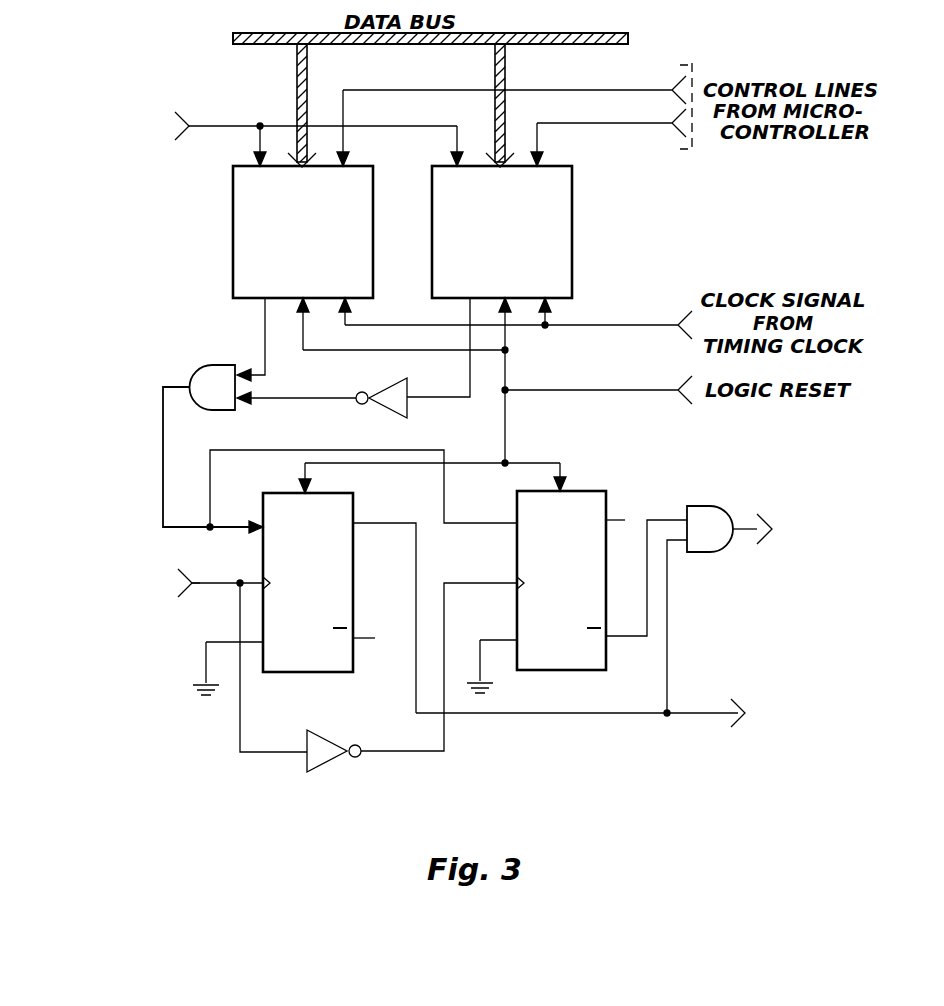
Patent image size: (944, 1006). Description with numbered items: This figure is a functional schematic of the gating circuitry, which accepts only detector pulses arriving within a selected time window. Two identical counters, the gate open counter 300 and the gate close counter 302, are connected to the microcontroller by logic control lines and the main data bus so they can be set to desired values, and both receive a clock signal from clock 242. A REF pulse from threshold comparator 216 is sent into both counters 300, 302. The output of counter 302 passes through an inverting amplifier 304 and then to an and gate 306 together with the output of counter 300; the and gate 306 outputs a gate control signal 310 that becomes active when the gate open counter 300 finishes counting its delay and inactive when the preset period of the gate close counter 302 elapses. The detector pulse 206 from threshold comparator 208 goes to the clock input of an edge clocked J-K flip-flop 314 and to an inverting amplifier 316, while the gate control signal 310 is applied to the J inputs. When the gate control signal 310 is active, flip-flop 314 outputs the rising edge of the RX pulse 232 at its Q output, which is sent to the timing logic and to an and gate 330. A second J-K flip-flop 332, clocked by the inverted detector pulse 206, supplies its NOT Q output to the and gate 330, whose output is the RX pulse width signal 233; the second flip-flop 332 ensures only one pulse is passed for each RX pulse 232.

The gate open counter 300 is at (233, 228).
The gate close counter 302 is at (572, 256).
The inverting amplifier 304 is at (412, 412).
The and gate 306 is at (222, 410).
The gate control signal 310 is at (128, 514).
The J-K flip-flop 314 is at (355, 590).
The inverting amplifier 316 is at (330, 770).
The and gate 330 is at (713, 552).
The second J-K flip-flop 332 is at (585, 491).
The RX pulse signal 232 is at (491, 715).
The RX pulse width signal 233 is at (824, 528).
The threshold comparator 216 is at (248, 134).
The detector pulse 206 is at (182, 648).
The threshold comparator 208 is at (123, 628).
The clock 242 is at (796, 710).